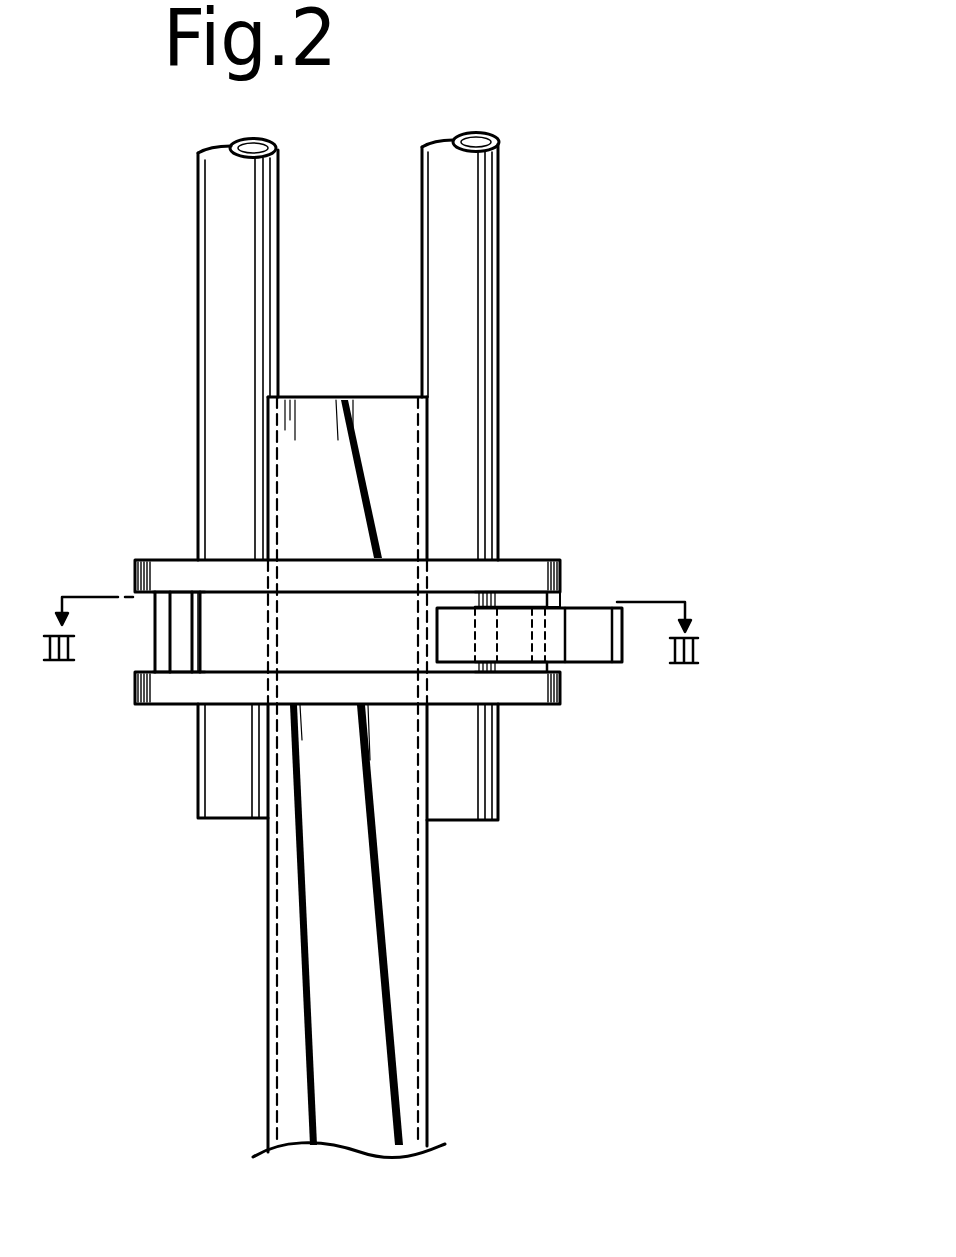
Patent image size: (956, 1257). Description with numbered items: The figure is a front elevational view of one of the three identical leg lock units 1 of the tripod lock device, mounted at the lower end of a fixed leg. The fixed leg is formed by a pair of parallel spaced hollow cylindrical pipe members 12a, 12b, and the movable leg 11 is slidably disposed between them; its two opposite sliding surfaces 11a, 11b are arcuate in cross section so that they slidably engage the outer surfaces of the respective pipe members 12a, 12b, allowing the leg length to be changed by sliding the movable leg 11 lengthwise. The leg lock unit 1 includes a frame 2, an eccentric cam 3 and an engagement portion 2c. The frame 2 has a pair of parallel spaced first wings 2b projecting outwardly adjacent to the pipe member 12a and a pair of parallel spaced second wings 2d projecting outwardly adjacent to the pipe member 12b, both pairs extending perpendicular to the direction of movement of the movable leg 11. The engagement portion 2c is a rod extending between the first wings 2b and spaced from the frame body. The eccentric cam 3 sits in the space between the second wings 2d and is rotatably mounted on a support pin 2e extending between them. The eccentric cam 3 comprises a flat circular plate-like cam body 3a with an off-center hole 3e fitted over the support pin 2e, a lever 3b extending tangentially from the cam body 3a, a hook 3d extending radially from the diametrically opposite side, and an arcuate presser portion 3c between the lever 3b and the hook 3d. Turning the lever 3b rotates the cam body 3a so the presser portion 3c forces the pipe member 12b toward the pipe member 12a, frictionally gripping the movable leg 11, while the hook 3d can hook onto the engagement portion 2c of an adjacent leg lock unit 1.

The leg lock unit 1 is at (243, 713).
The frame 2 is at (367, 686).
The first wings 2b is at (160, 568).
The engagement portion 2c is at (158, 632).
The second wings 2d is at (543, 566).
The support pin 2e is at (547, 606).
The eccentric cam 3 is at (660, 706).
The cam body 3a is at (530, 640).
The lever 3b is at (455, 643).
The presser portion 3c is at (497, 638).
The hook 3d is at (598, 653).
The hole 3e is at (467, 640).
The movable leg 11 is at (313, 418).
The sliding surface 11a is at (418, 1027).
The sliding surface 11b is at (277, 1027).
The pipe member 12a is at (232, 316).
The pipe member 12b is at (472, 317).